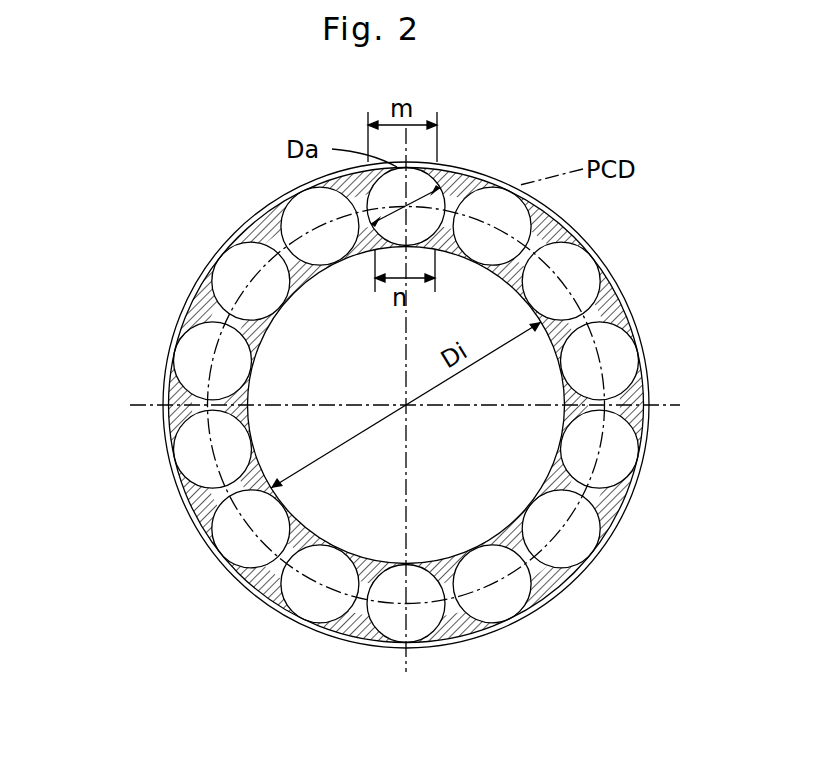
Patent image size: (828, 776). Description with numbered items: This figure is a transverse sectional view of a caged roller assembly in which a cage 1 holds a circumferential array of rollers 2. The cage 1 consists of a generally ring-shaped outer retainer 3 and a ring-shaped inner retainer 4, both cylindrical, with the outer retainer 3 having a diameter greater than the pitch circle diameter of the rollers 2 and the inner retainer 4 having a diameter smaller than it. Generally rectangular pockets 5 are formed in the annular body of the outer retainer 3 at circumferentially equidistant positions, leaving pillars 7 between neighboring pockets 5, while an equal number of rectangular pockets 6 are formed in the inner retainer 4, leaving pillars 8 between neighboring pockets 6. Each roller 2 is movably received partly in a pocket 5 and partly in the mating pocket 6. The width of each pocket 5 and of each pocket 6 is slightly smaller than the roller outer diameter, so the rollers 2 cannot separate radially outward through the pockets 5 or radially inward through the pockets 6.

The cage 1 is at (92, 470).
The roller 2 is at (587, 267).
The outer retainer 3 is at (166, 420).
The inner retainer 4 is at (207, 533).
The pocket 5 is at (240, 263).
The pocket 6 is at (282, 292).
The pillar 7 is at (443, 567).
The pillar 8 is at (460, 643).